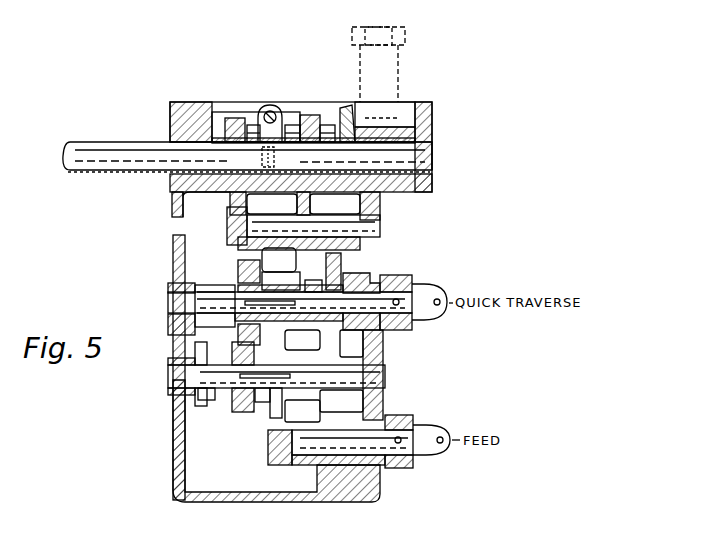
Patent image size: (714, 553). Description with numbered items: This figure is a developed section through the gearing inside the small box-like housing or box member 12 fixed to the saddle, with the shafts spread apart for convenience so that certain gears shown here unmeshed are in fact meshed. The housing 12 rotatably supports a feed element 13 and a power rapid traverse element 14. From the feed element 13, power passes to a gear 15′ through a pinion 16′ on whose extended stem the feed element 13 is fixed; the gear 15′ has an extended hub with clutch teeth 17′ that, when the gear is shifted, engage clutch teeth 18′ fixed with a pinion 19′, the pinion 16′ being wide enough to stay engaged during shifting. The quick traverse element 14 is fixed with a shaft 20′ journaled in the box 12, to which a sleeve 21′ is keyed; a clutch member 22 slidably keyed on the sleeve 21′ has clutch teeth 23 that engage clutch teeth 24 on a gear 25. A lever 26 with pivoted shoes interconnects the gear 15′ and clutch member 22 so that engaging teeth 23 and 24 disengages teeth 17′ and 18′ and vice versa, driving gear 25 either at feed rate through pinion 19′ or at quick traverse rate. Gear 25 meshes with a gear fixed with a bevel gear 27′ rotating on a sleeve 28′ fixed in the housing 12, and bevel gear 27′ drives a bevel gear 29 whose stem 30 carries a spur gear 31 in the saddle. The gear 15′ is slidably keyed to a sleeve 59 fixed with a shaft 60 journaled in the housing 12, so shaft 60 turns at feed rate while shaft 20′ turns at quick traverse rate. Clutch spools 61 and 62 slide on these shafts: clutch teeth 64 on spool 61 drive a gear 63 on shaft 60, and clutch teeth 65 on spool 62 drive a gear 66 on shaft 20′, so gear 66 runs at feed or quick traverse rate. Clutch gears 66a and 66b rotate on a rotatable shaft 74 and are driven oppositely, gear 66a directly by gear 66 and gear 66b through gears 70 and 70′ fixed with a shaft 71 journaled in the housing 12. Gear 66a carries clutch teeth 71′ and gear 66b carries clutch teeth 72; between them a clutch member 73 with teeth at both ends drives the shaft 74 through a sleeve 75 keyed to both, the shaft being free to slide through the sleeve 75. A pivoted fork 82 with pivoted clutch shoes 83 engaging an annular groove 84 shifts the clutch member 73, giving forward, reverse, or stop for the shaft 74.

The housing or box member 12 is at (174, 440).
The feed element 13 is at (410, 416).
The power rapid traverse element 14 is at (394, 276).
The gear 15′ is at (272, 410).
The pinion 16′ is at (270, 452).
The clutch teeth 17′ is at (302, 411).
The clutch teeth 18′ is at (341, 401).
The pinion 19′ is at (361, 346).
The shaft 20′ is at (420, 306).
The sleeve 21′ is at (281, 281).
The clutch member 22 is at (279, 260).
The clutch teeth 23 is at (302, 339).
The clutch teeth 24 is at (316, 280).
The gear 25 is at (338, 263).
The lever 26 is at (328, 126).
The bevel gear 27′ is at (347, 110).
The sleeve 28′ is at (430, 140).
The bevel gear 29 is at (398, 106).
The stem 30 is at (384, 40).
The spur gear 31 is at (398, 40).
The sleeve 59 is at (264, 401).
The shaft 60 is at (386, 375).
The clutch element or spool 61 is at (207, 406).
The clutch element or spool 62 is at (173, 275).
The gear 63 is at (244, 414).
The clutch teeth 64 is at (212, 401).
The clutch teeth 65 is at (224, 285).
The gear 66 is at (244, 268).
The clutch gear 66a is at (230, 122).
The clutch gear 66b is at (309, 116).
The gear 70 is at (335, 205).
The gear 70′ is at (232, 206).
The shaft 71 is at (381, 229).
The clutch teeth 71′ is at (250, 128).
The clutch teeth 72 is at (290, 125).
The clutch member 73 is at (254, 125).
The rotatable shaft 74 is at (95, 142).
The sleeve 75 is at (251, 157).
The pivoted fork 82 is at (272, 105).
The clutch shoes 83 is at (275, 158).
The annular groove 84 is at (272, 205).